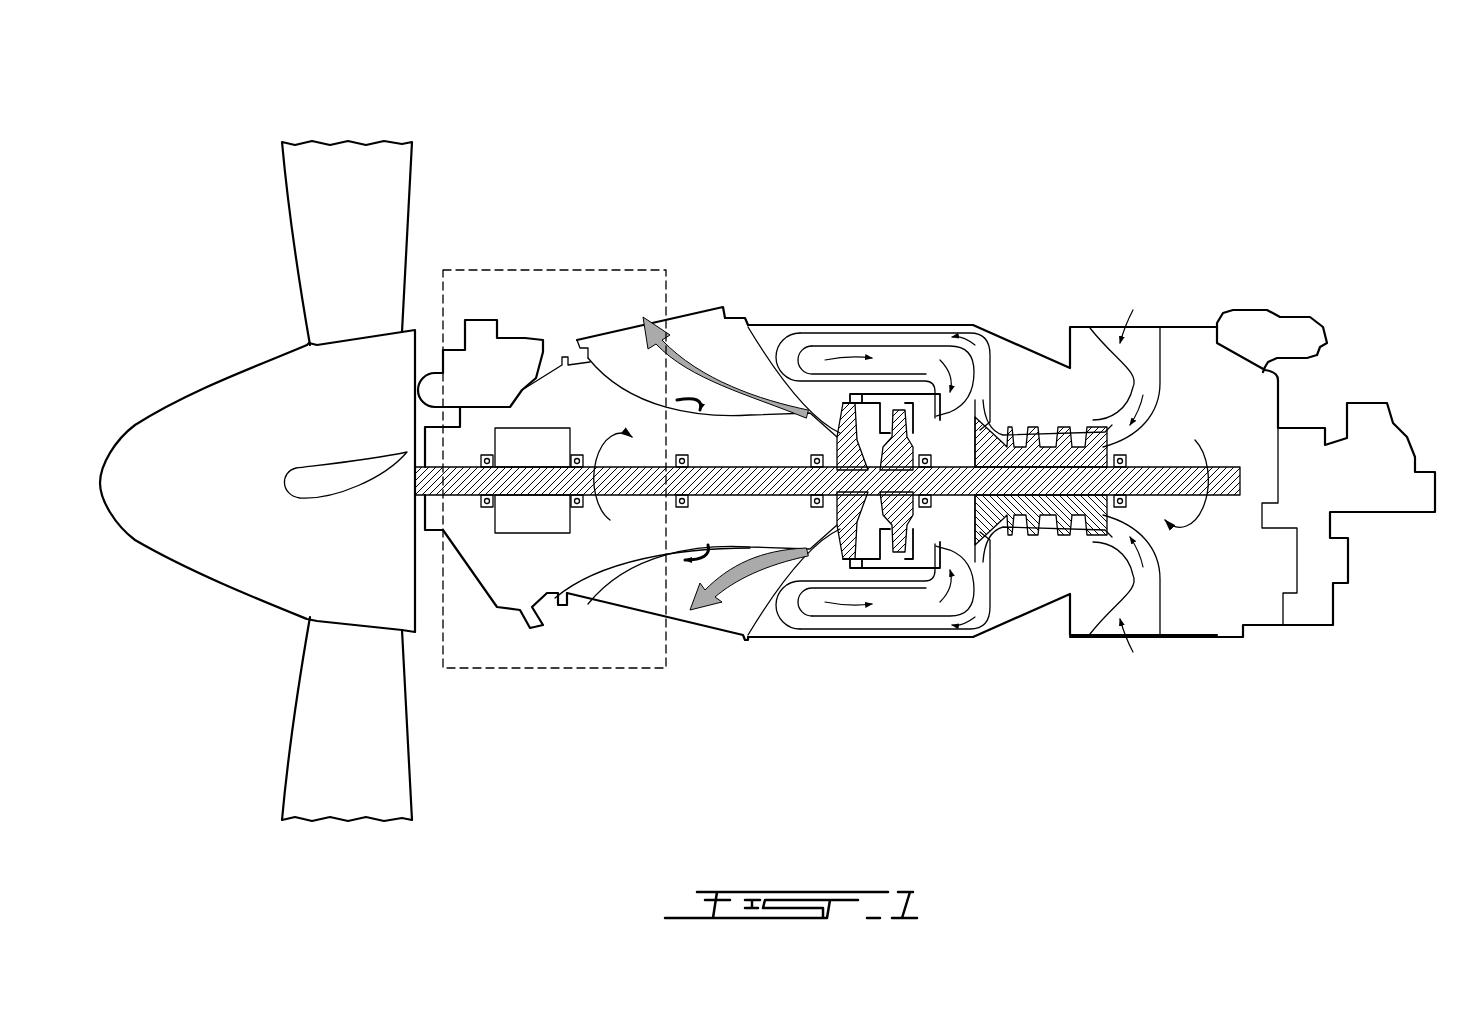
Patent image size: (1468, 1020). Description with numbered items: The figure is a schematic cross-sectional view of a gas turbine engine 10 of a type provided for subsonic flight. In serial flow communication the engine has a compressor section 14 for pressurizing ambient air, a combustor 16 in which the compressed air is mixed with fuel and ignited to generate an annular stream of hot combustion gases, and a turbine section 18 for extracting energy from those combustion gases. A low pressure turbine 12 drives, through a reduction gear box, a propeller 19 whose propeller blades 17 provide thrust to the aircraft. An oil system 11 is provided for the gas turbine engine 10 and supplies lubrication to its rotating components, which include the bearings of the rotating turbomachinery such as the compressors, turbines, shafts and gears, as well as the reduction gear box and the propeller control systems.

The gas turbine engine 10 is at (1022, 172).
The oil system 11 is at (557, 266).
The low pressure turbine 12 is at (851, 400).
The compressor section 14 is at (1043, 407).
The combustor 16 is at (884, 348).
The propeller blades 17 is at (413, 183).
The turbine section 18 is at (872, 565).
The propeller 19 is at (193, 415).